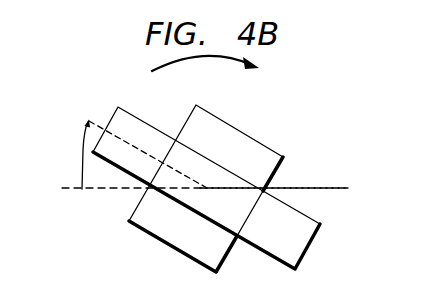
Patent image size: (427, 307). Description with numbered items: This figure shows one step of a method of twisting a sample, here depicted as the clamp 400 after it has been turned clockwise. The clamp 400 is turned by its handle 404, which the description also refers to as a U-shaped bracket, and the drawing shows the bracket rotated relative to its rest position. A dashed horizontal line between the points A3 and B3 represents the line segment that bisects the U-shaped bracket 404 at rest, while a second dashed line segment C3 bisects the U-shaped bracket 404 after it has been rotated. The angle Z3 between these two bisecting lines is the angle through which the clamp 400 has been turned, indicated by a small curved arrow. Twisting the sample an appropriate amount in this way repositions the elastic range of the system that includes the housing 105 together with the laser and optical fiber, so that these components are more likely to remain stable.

The housing 105 is at (116, 107).
The clamp 400 is at (212, 122).
The handle 404 is at (279, 156).
The line segment end point A3 is at (194, 189).
The line segment end point B3 is at (287, 189).
The line segment C3 is at (133, 147).
The angle Z3 is at (74, 155).